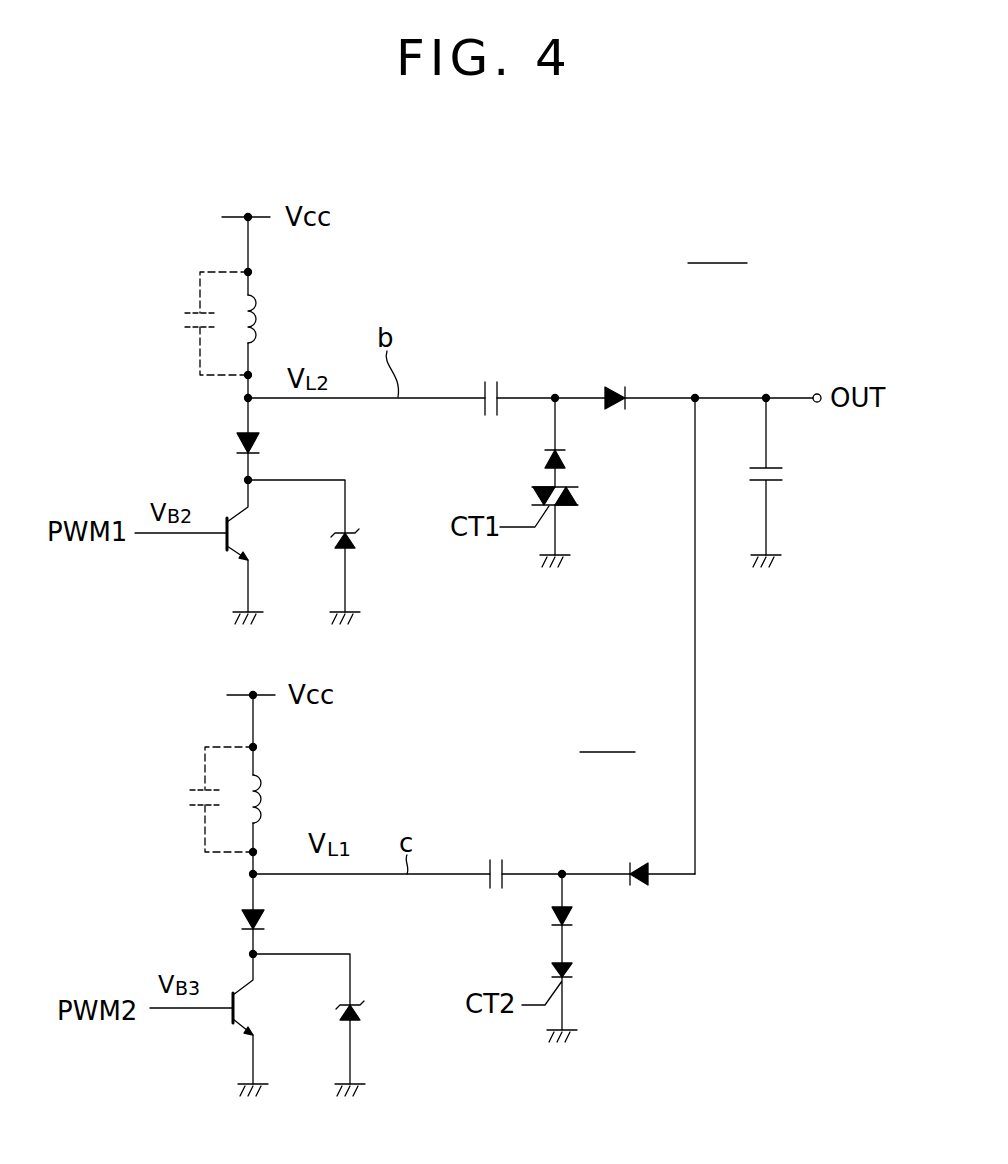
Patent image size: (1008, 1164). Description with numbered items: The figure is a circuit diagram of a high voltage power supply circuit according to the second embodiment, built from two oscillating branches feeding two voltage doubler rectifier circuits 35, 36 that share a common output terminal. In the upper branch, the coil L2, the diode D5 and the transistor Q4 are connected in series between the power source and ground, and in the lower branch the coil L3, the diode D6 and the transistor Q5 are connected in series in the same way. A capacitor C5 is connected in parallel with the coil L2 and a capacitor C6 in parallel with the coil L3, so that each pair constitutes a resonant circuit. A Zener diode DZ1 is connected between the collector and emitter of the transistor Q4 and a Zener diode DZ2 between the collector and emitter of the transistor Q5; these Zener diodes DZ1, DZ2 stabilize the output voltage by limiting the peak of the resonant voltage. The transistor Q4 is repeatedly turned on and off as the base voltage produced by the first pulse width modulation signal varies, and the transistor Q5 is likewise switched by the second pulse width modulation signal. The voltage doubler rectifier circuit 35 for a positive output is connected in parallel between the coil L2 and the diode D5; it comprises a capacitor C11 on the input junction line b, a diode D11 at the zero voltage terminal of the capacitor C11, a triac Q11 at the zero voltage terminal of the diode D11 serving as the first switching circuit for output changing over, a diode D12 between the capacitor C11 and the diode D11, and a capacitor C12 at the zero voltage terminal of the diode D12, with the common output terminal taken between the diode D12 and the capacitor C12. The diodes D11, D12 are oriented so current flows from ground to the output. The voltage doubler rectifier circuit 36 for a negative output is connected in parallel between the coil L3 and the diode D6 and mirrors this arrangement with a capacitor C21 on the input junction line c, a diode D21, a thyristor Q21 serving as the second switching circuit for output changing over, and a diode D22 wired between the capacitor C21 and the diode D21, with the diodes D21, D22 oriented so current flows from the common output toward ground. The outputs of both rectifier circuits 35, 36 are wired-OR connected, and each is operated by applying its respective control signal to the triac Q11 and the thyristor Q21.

The voltage doubler rectifier circuit 35 is at (681, 330).
The voltage doubler rectifier circuit 36 is at (543, 823).
The coil L2 is at (256, 334).
The coil L3 is at (274, 799).
The capacitor C5 is at (180, 323).
The capacitor C6 is at (182, 799).
The diode D5 is at (258, 437).
The diode D6 is at (265, 917).
The transistor Q4 is at (238, 531).
The transistor Q5 is at (240, 1010).
The Zener diode DZ1 is at (357, 540).
The Zener diode DZ2 is at (362, 1012).
The capacitor C11 is at (485, 382).
The capacitor C21 is at (490, 860).
The diode D11 is at (566, 459).
The diode D21 is at (573, 918).
The diode D12 is at (613, 393).
The diode D22 is at (641, 867).
The triac Q11 is at (580, 501).
The thyristor Q21 is at (573, 969).
The capacitor C12 is at (784, 478).